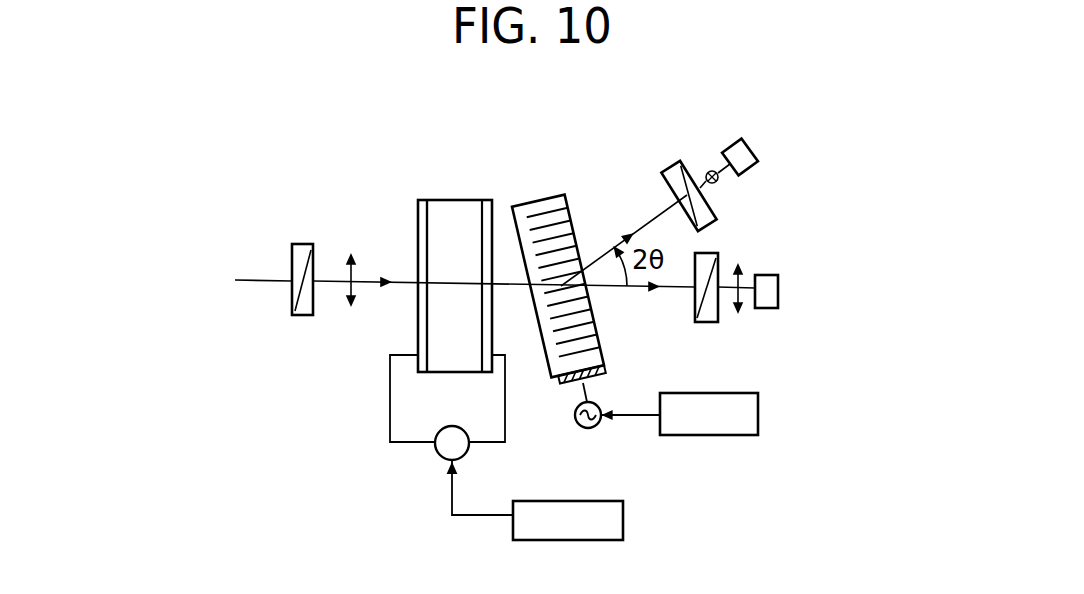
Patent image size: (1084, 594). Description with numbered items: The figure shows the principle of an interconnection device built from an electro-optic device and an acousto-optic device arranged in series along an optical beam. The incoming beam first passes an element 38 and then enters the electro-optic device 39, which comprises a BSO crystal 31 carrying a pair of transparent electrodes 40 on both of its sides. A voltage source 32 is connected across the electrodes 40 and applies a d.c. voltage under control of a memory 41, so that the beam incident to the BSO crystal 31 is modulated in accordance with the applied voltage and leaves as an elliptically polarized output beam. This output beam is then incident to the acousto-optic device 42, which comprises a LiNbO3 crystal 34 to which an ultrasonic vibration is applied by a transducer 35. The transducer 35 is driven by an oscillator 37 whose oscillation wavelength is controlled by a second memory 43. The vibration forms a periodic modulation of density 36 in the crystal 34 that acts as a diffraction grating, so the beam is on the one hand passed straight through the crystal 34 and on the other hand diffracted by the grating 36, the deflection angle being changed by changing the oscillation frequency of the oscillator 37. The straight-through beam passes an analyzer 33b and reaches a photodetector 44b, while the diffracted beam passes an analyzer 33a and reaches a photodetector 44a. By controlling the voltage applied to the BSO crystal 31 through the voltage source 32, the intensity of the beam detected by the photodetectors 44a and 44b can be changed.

The BSO crystal 31 is at (462, 215).
The voltage source 32 is at (440, 457).
The analyzer 33a is at (672, 168).
The analyzer 33b is at (710, 322).
The LiNbO3 crystal 34 is at (558, 195).
The transducer 35 is at (605, 372).
The periodic modulation of density 36 is at (528, 218).
The oscillator 37 is at (580, 426).
The polarizer 38 is at (302, 252).
The electro-optic device 39 is at (440, 213).
The transparent electrodes 40 is at (418, 218).
The memory 41 is at (623, 520).
The acousto-optic device 42 is at (580, 231).
The memory 43 is at (726, 436).
The photodetector 44a is at (730, 146).
The photodetector 44b is at (768, 275).